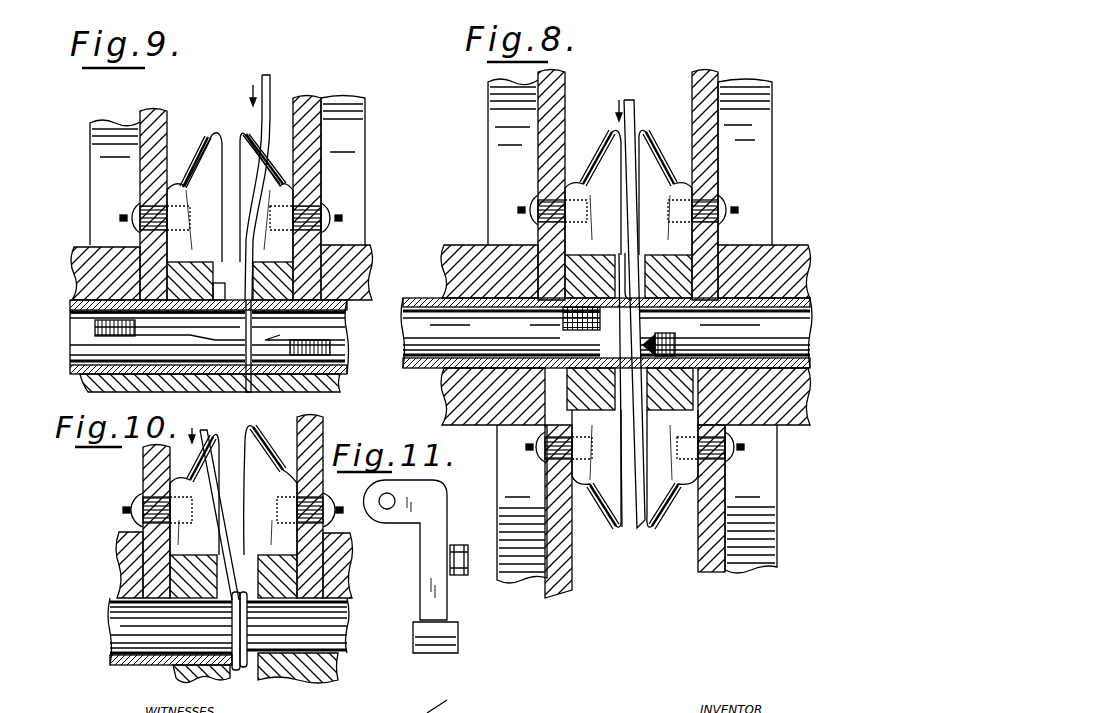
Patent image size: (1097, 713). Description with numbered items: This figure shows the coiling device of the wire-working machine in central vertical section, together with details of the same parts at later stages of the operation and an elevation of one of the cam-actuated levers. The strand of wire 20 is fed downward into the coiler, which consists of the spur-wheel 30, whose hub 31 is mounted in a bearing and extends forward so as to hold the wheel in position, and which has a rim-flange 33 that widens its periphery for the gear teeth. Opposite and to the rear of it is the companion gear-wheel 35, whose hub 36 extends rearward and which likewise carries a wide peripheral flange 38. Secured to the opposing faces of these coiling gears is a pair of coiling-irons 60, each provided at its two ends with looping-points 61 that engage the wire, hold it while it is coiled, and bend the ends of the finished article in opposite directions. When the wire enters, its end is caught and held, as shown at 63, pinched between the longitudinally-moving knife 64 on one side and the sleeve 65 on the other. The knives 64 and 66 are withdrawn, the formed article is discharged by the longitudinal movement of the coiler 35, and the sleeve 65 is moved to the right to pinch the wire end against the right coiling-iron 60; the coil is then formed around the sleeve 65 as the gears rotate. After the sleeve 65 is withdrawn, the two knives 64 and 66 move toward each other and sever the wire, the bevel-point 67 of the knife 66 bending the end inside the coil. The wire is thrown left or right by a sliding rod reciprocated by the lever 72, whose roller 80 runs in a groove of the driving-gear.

In FIG. 9, the strand of wire 20 is at (273, 92).
In FIG. 8, the strand of wire 20 is at (637, 111).
In FIG. 10, the strand of wire 20 is at (207, 514).
In FIG. 9, the spur-wheel 30 is at (152, 119).
In FIG. 8, the spur-wheel 30 is at (566, 103).
In FIG. 10, the spur-wheel 30 is at (143, 471).
In FIG. 9, the hub 31 is at (82, 272).
In FIG. 9, the rim-flange 33 is at (115, 182).
In FIG. 8, the rim-flange 33 is at (517, 331).
In FIG. 9, the companion gear-wheel 35 is at (316, 170).
In FIG. 8, the companion gear-wheel 35 is at (716, 160).
In FIG. 10, the companion gear-wheel 35 is at (326, 433).
In FIG. 9, the hub 36 is at (376, 248).
In FIG. 8, the hub 36 is at (440, 251).
In FIG. 9, the peripheral flange 38 is at (355, 152).
In FIG. 8, the peripheral flange 38 is at (762, 148).
In FIG. 9, the coiling-iron 60 is at (287, 186).
In FIG. 8, the coiling-iron 60 is at (631, 328).
In FIG. 10, the coiling-iron 60 is at (233, 490).
In FIG. 9, the looping-points 61 is at (246, 141).
In FIG. 8, the looping-points 61 is at (651, 143).
In FIG. 10, the looping-points 61 is at (236, 456).
In FIG. 8, the point where wire end is caught 63 is at (600, 330).
In FIG. 9, the longitudinally-moving knife 64 is at (353, 327).
In FIG. 8, the longitudinally-moving knife 64 is at (726, 333).
In FIG. 9, the sleeve 65 is at (240, 376).
In FIG. 8, the sleeve 65 is at (424, 300).
In FIG. 10, the sleeve 65 is at (122, 667).
In FIG. 9, the knife 66 is at (73, 347).
In FIG. 8, the knife 66 is at (500, 333).
In FIG. 8, the bevel-point 67 is at (661, 358).
In FIG. 11, the lever 72 is at (442, 517).
In FIG. 11, the roller 80 is at (463, 577).